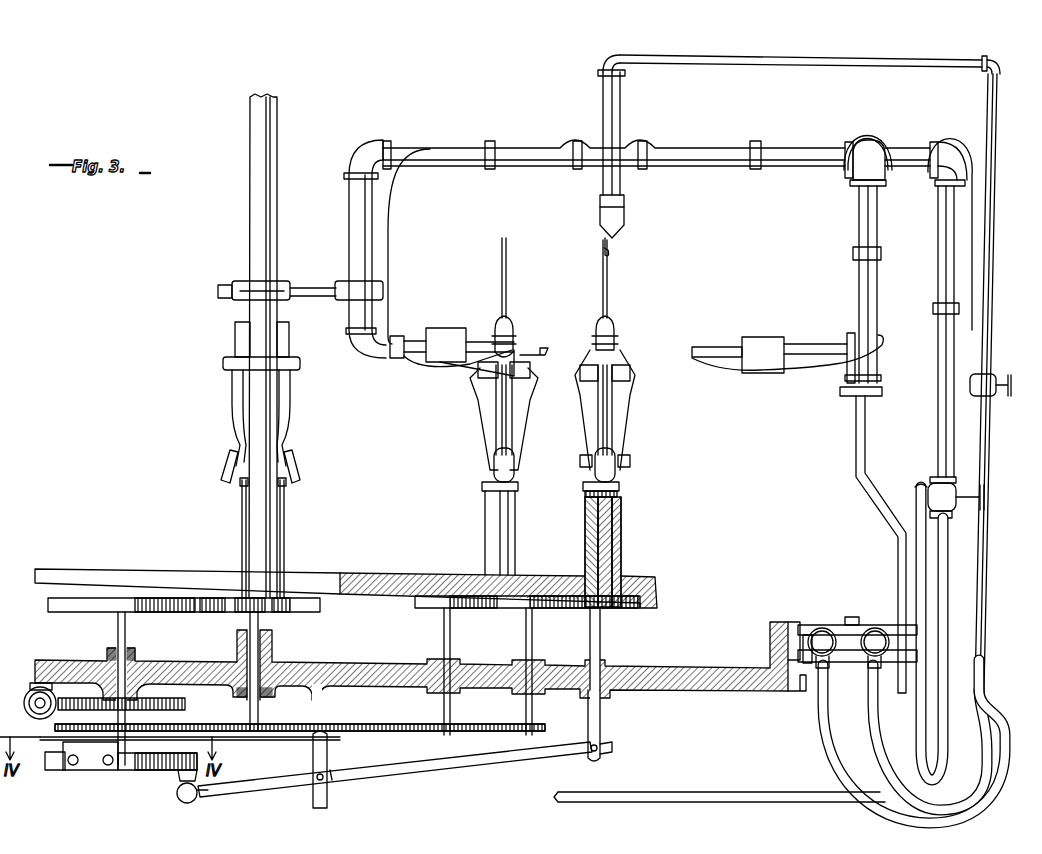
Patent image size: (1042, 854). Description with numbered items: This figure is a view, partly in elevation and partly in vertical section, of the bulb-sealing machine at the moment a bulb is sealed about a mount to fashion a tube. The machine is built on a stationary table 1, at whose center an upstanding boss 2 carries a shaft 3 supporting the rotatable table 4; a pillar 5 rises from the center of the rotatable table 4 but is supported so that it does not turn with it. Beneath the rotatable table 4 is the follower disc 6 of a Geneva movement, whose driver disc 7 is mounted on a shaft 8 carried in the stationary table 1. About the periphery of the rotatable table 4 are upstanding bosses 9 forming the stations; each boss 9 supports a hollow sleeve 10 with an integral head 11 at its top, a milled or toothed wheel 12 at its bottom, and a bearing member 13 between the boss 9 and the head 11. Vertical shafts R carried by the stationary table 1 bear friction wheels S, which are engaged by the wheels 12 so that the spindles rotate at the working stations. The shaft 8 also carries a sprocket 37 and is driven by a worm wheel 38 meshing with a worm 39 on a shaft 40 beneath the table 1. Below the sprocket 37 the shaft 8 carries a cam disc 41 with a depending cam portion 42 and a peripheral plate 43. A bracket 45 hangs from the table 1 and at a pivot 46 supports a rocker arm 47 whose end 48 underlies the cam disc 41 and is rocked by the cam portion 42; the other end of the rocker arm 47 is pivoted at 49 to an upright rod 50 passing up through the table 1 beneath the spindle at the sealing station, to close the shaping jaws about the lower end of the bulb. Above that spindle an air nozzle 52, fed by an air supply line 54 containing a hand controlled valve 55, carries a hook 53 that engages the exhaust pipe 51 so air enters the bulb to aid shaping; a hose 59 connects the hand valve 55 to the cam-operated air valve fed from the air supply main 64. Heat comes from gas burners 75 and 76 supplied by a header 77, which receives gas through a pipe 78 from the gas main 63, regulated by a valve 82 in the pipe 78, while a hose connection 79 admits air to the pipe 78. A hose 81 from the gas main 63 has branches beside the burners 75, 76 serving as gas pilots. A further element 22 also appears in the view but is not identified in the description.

The stationary table 1 is at (374, 664).
The upstanding boss 2 is at (274, 648).
The shaft 3 is at (248, 672).
The rotatable table 4 is at (378, 575).
The pillar 5 is at (278, 250).
The follower disc 6 is at (305, 614).
The driver disc 7 is at (172, 617).
The shaft 8 is at (118, 630).
The boss 9 is at (512, 535).
The hollow sleeve 10 is at (614, 520).
The head 11 is at (620, 488).
The wheel 12 is at (630, 604).
The bearing member 13 is at (618, 496).
The rack bar 22 is at (378, 718).
The sprocket 37 is at (140, 726).
The worm wheel 38 is at (176, 694).
The worm 39 is at (22, 680).
The worm shaft 40 is at (46, 698).
The cam disc 41 is at (138, 776).
The cam portion 42 is at (178, 800).
The plate 43 is at (88, 776).
The bracket 45 is at (305, 748).
The pivot 46 is at (325, 790).
The rocker arm 47 is at (420, 790).
The end of rocker arm 48 is at (200, 797).
The pivot 49 is at (602, 742).
The upright rod 50 is at (602, 650).
The exhaust pipe 51 is at (612, 292).
The air nozzle 52 is at (625, 214).
The hook 53 is at (598, 246).
The air supply line 54 is at (805, 66).
The hand controlled valve 55 is at (996, 376).
The hose 59 is at (670, 790).
The gas main 63 is at (832, 620).
The air supply main 64 is at (875, 628).
The gas burner 75 is at (478, 345).
The gas burner 76 is at (742, 345).
The header 77 is at (705, 172).
The pipe 78 is at (942, 262).
The hose connection 79 is at (948, 678).
The hose 81 is at (478, 358).
The valve 82 is at (934, 482).
The vertically extending shaft R is at (452, 640).
The friction wheel S is at (428, 610).